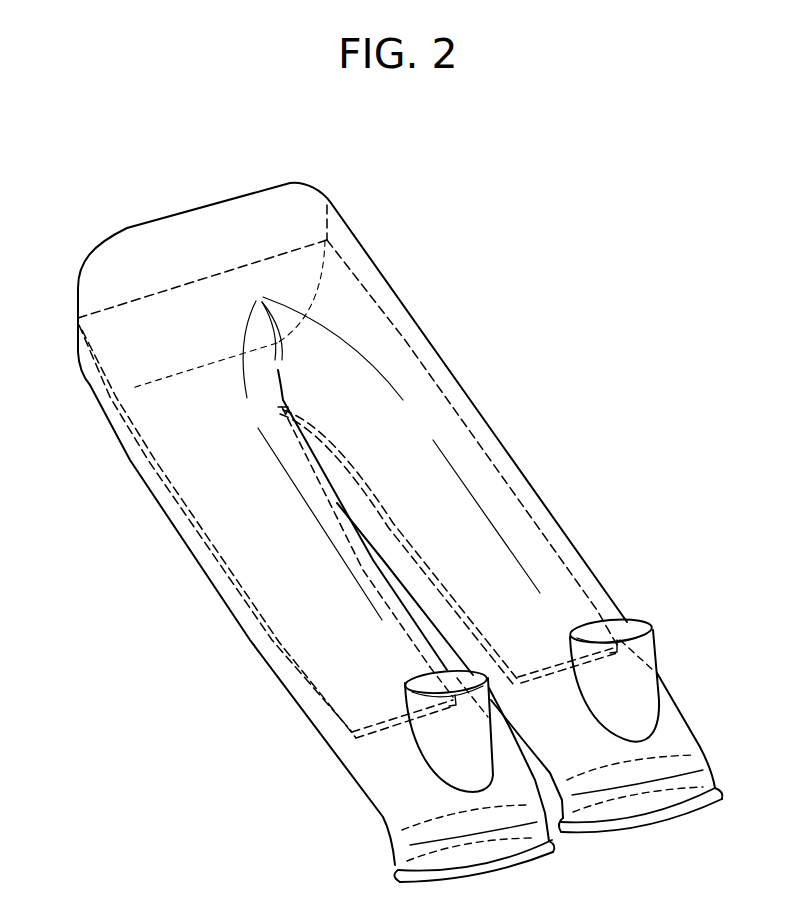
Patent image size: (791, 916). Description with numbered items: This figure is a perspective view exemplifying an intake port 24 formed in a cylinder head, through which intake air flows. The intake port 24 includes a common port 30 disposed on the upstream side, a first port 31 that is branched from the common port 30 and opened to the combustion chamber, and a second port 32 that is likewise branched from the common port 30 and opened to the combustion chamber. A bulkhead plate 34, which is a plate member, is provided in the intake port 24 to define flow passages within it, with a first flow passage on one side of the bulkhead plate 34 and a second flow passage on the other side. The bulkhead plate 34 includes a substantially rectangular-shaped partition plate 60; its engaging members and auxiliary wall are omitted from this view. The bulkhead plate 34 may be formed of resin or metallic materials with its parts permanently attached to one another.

The intake port 24 is at (496, 354).
The common port 30 is at (180, 240).
The first port 31 is at (550, 573).
The second port 32 is at (320, 641).
The bulkhead plate 34 is at (207, 494).
The partition plate 60 is at (275, 577).